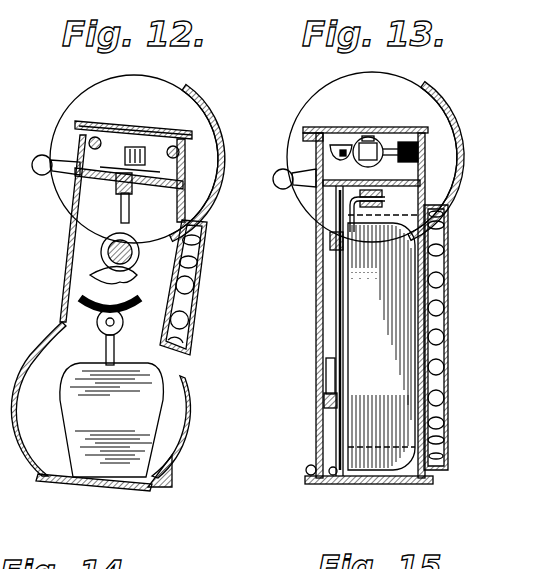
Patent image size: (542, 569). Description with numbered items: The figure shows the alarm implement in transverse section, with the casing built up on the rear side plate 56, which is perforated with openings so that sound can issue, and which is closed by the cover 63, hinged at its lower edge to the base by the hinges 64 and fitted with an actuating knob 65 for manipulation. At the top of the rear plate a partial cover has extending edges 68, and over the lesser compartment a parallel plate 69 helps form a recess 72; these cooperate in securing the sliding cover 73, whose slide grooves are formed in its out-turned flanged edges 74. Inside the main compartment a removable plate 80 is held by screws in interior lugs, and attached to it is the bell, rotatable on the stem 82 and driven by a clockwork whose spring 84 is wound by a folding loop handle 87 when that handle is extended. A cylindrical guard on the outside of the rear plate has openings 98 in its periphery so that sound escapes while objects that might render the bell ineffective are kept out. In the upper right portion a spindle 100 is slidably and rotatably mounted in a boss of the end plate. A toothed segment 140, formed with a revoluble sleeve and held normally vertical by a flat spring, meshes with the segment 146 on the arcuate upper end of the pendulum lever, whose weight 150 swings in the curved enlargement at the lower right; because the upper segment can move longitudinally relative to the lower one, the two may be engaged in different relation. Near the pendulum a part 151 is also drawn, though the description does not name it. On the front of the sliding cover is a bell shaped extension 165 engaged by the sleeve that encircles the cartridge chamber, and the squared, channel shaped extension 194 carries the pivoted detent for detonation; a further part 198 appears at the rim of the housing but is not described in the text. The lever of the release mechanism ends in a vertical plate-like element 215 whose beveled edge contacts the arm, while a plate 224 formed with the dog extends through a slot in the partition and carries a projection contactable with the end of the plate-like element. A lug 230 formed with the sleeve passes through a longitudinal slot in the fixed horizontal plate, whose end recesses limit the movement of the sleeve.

In FIG. 12, the rear side plate 56 is at (188, 273).
In FIG. 13, the cover 63 is at (318, 320).
In FIG. 13, the hinges 64 is at (312, 472).
In FIG. 12, the actuating knob 65 is at (40, 174).
In FIG. 13, the actuating knob 65 is at (310, 186).
In FIG. 12, the extending edges 68 is at (190, 405).
In FIG. 12, the parallel plate 69 is at (116, 125).
In FIG. 12, the recess 72 is at (176, 130).
In FIG. 13, the sliding cover 73 is at (340, 158).
In FIG. 13, the out-turned flanged edges 74 is at (420, 147).
In FIG. 13, the removable plate 80 is at (340, 303).
In FIG. 13, the stem 82 is at (347, 336).
In FIG. 13, the spring 84 is at (376, 308).
In FIG. 13, the folding loop handle 87 is at (330, 375).
In FIG. 12, the openings 98 is at (184, 293).
In FIG. 13, the openings 98 is at (441, 262).
In FIG. 12, the spindle 100 is at (139, 255).
In FIG. 12, the toothed segment 140 is at (98, 277).
In FIG. 12, the segment 146 is at (90, 290).
In FIG. 12, the weight 150 is at (101, 437).
In FIG. 12, the rod 151 is at (129, 213).
In FIG. 12, the bell shaped extension 165 is at (148, 101).
In FIG. 12, the squared extension 194 is at (186, 170).
In FIG. 13, the squared extension 194 is at (378, 140).
In FIG. 13, the rim 198 is at (430, 133).
In FIG. 12, the vertical plate-like element 215 is at (116, 193).
In FIG. 12, the plate 224 is at (78, 183).
In FIG. 13, the lug 230 is at (322, 206).